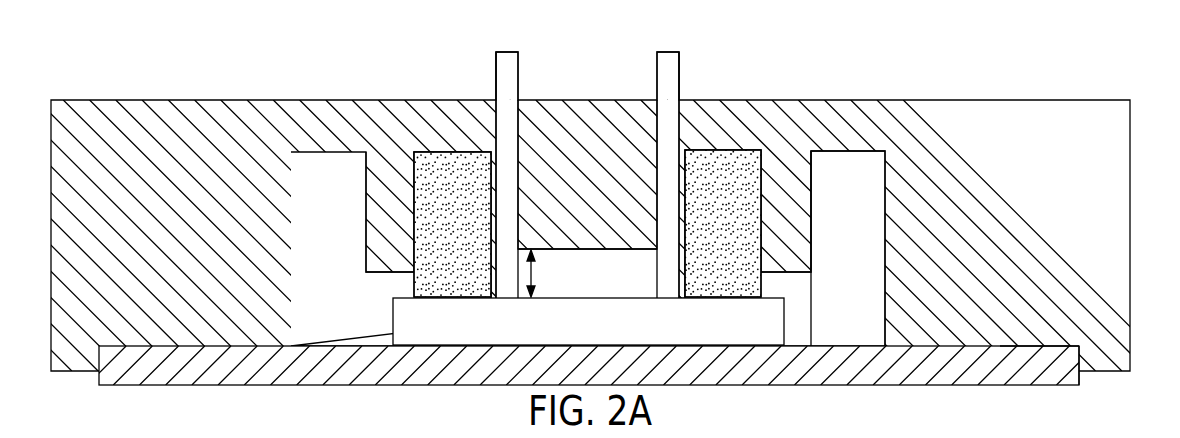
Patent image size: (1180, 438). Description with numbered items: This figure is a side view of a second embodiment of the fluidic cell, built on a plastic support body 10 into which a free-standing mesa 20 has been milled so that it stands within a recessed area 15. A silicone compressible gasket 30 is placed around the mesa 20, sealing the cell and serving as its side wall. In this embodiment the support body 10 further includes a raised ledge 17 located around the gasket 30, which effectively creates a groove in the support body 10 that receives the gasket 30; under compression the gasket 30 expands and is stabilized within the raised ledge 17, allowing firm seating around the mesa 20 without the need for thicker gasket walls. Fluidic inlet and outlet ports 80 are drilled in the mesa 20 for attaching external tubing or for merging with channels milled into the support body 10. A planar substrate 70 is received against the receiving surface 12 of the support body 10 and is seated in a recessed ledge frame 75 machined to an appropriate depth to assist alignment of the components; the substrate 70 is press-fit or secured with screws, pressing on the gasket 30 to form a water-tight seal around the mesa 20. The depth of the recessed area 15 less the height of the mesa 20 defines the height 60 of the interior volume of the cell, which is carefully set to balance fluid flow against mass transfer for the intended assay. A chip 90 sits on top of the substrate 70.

The support body 10 is at (1120, 173).
The receiving surface 12 is at (1050, 346).
The recessed area 15 is at (847, 175).
The raised ledge 17 is at (393, 177).
The mesa 20 is at (574, 249).
The gasket 30 is at (452, 160).
The height 60 is at (532, 274).
The substrate 70 is at (1021, 387).
The recessed ledge frame 75 is at (1083, 356).
The fluidic inlet and outlet ports 80 is at (507, 60).
The chip 90 is at (588, 321).